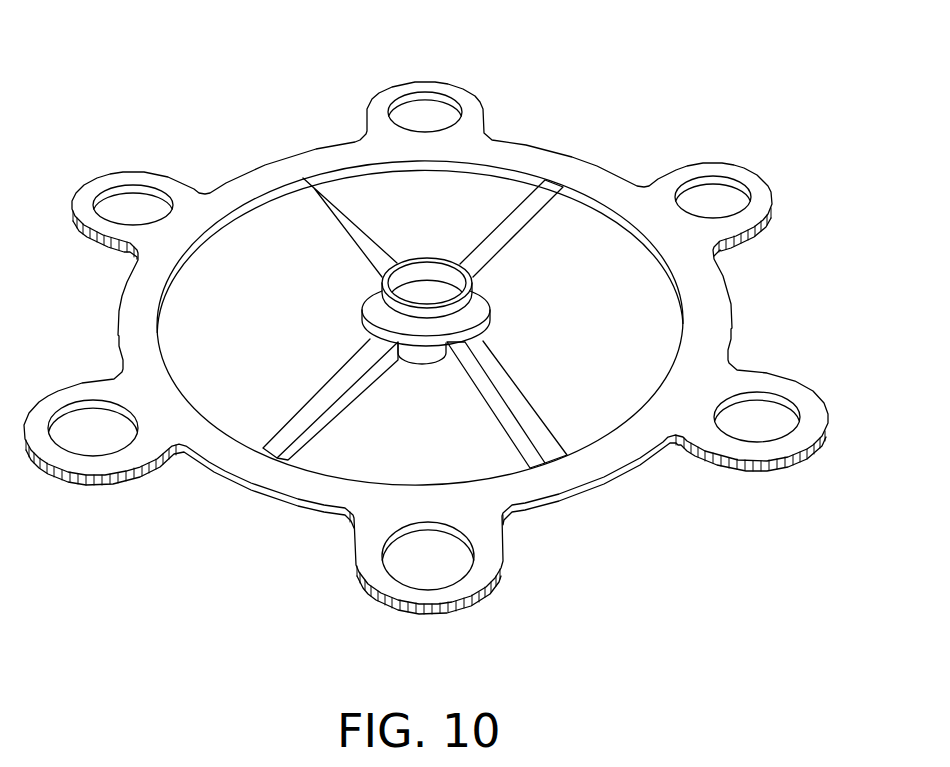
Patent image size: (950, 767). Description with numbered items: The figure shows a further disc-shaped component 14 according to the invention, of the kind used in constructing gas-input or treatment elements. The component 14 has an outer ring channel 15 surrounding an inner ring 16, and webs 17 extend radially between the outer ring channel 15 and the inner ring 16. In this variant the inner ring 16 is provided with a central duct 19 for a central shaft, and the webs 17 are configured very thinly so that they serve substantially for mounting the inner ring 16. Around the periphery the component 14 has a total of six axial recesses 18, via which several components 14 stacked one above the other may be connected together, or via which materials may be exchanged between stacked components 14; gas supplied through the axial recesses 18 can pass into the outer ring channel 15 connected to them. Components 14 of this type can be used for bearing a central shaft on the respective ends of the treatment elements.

The component 14 is at (277, 474).
The outer ring channel 15 is at (633, 452).
The inner ring 16 is at (430, 343).
The webs 17 is at (533, 220).
The axial recesses 18 is at (803, 415).
The duct 19 is at (427, 288).